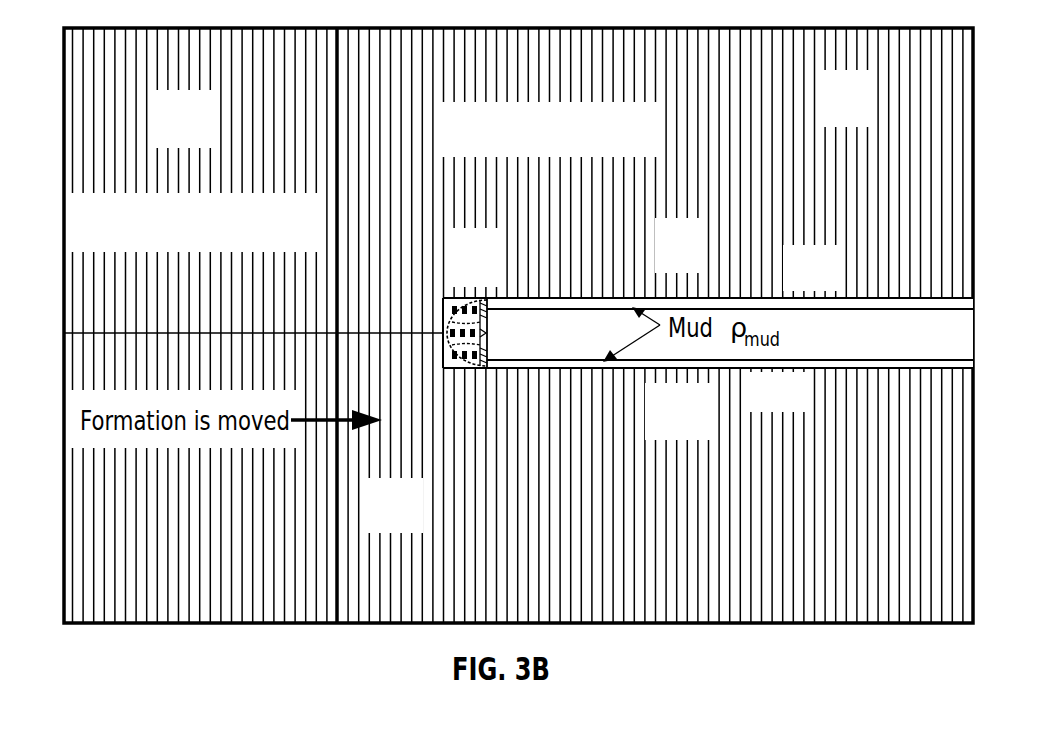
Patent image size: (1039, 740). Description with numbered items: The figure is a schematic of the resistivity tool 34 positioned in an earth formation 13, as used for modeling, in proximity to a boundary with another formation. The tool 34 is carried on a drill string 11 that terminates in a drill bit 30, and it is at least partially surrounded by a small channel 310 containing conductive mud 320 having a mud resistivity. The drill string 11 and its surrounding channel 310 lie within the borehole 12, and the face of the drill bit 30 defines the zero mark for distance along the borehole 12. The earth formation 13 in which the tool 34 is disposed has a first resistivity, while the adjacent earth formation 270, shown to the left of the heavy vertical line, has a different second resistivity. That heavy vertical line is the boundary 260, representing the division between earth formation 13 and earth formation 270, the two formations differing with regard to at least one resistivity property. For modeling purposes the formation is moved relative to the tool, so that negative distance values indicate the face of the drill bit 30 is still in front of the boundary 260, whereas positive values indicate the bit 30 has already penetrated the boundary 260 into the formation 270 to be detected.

The earth formation 270 is at (207, 132).
The earth formation 13 is at (862, 110).
The drill bit 30 is at (465, 298).
The borehole 12 is at (657, 297).
The drill string 11 is at (797, 318).
The conductive mud 320 is at (813, 358).
The small channel 310 is at (743, 370).
The resistivity tool 34 is at (637, 397).
The boundary 260 is at (338, 523).